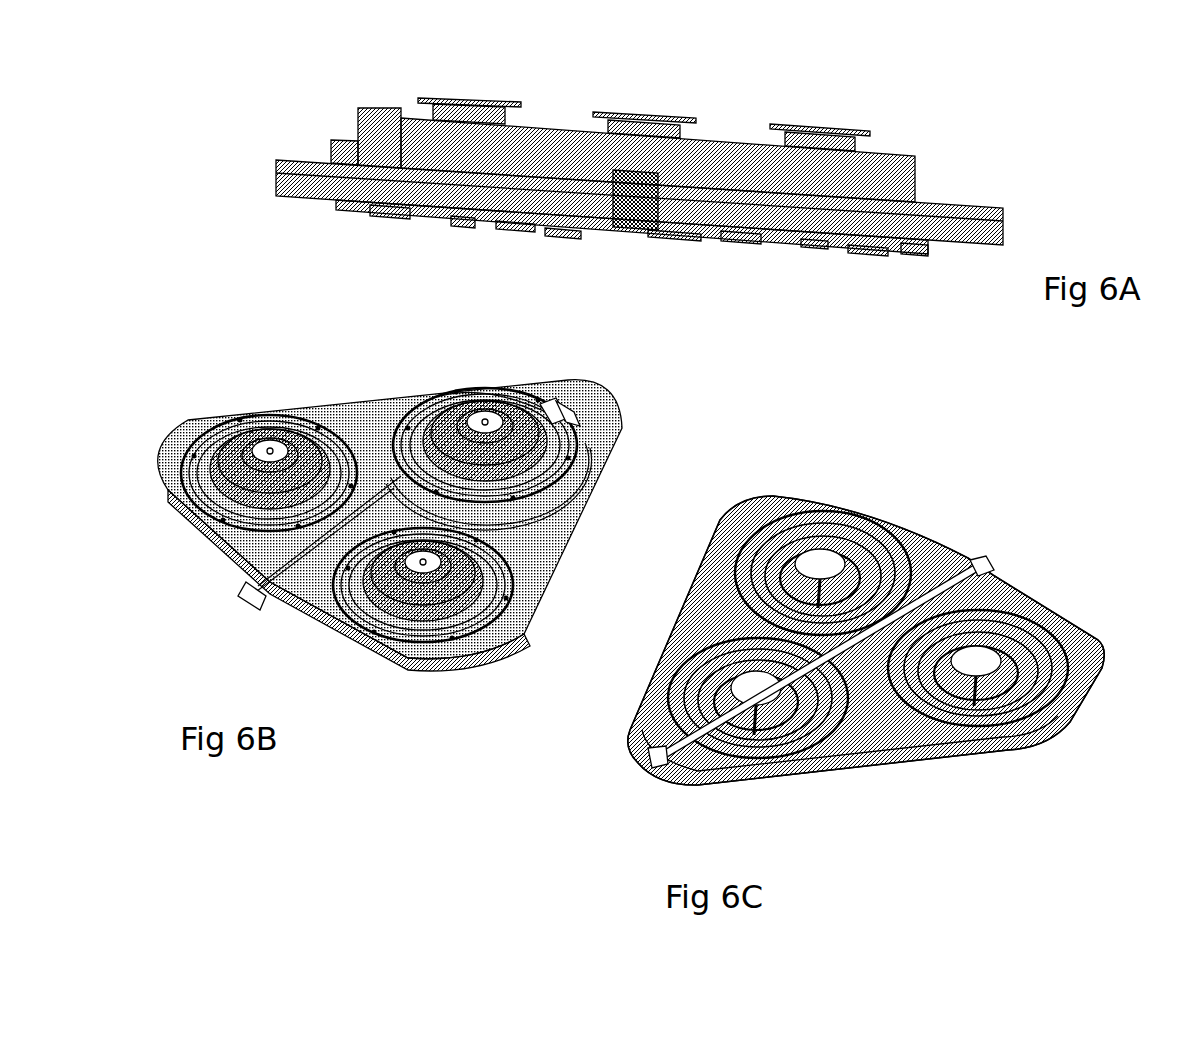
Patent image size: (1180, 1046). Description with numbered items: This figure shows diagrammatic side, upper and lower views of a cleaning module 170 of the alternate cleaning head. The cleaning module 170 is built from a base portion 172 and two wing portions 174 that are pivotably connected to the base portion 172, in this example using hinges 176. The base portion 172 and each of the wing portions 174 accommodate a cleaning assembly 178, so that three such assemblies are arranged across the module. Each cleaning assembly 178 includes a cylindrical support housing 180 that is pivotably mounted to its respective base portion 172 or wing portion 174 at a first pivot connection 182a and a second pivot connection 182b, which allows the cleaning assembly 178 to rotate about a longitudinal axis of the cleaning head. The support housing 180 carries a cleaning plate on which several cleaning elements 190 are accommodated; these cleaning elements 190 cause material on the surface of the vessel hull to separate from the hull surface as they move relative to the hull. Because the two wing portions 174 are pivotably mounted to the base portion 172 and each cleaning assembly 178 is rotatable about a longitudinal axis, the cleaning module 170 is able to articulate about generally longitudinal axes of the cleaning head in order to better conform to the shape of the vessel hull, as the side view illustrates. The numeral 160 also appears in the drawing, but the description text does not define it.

In FIG. 6C, the base surface 160 is at (690, 567).
In FIG. 6A, the cleaning module 170 is at (642, 169).
In FIG. 6B, the cleaning module 170 is at (382, 511).
In FIG. 6C, the cleaning module 170 is at (857, 616).
In FIG. 6A, the base portion 172 is at (626, 226).
In FIG. 6B, the base portion 172 is at (292, 555).
In FIG. 6C, the base portion 172 is at (650, 747).
In FIG. 6A, the wing portion 174 is at (276, 166).
In FIG. 6B, the wing portion 174 is at (366, 396).
In FIG. 6C, the wing portion 174 is at (733, 500).
In FIG. 6B, the hinge 176 is at (548, 398).
In FIG. 6C, the hinge 176 is at (624, 733).
In FIG. 6A, the cleaning assembly 178 is at (616, 86).
In FIG. 6B, the cleaning assembly 178 is at (244, 412).
In FIG. 6A, the cylindrical support housing 180 is at (544, 226).
In FIG. 6B, the cylindrical support housing 180 is at (176, 456).
In FIG. 6C, the cylindrical support housing 180 is at (790, 503).
In FIG. 6C, the first pivot connection 182a is at (880, 507).
In FIG. 6C, the second pivot connection 182b is at (918, 743).
In FIG. 6A, the cleaning element 190 is at (468, 216).
In FIG. 6C, the cleaning element 190 is at (739, 753).